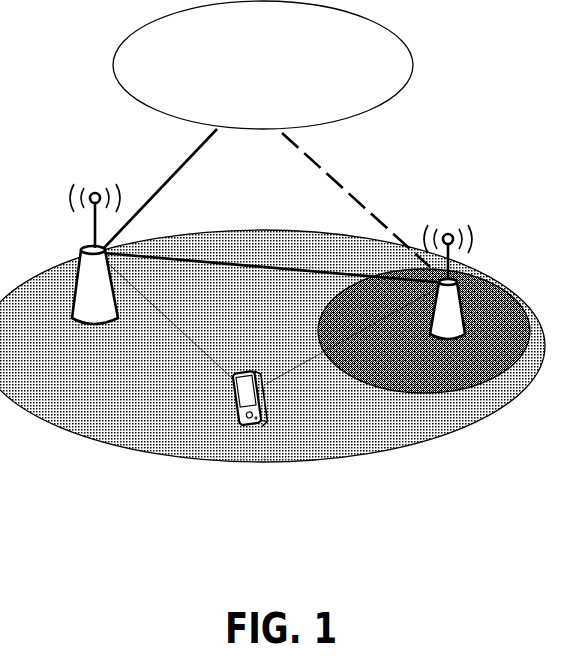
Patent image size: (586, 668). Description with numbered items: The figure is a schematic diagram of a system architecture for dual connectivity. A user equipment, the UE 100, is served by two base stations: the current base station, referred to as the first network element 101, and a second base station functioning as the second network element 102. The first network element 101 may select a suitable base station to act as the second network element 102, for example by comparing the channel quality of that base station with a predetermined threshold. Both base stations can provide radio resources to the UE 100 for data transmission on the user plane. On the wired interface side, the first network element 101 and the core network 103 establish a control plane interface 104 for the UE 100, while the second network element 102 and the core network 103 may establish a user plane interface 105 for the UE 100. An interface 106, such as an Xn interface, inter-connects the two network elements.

The UE 100 is at (250, 414).
The first network element 101 is at (95, 272).
The second network element 102 is at (448, 299).
The core network 103 is at (263, 65).
The control plane interface 104 is at (160, 189).
The user plane interface 105 is at (356, 200).
The interface 106 is at (275, 268).